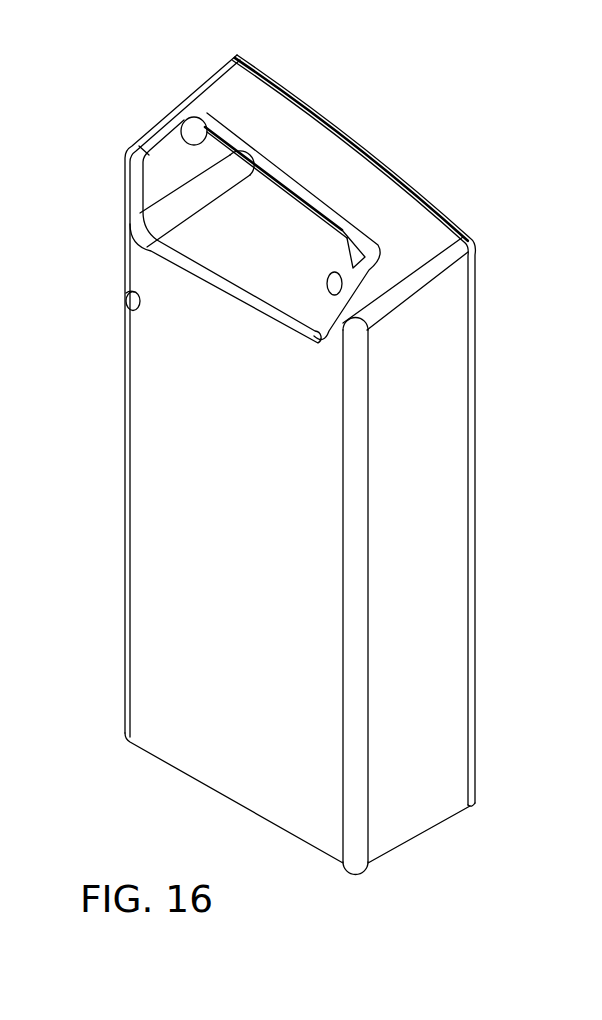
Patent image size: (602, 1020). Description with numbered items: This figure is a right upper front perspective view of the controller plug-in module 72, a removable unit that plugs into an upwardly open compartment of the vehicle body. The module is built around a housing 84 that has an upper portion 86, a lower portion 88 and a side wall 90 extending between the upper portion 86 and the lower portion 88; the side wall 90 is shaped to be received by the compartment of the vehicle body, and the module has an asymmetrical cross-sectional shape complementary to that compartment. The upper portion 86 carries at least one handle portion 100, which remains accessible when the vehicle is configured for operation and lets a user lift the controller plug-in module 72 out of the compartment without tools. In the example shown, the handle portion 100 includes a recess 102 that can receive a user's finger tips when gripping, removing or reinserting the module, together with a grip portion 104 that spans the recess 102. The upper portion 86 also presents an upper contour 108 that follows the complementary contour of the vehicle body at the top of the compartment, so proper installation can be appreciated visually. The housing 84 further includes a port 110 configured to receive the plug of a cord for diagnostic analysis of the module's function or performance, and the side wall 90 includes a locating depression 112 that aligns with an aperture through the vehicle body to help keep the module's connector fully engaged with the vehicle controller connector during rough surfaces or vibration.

The controller plug-in module 72 is at (492, 125).
The housing 84 is at (478, 643).
The upper portion 86 is at (138, 242).
The lower portion 88 is at (443, 772).
The side wall 90 is at (443, 523).
The handle portion 100 is at (310, 195).
The recess 102 is at (193, 165).
The grip portion 104 is at (305, 172).
The upper contour 108 is at (388, 344).
The port 110 is at (326, 275).
The locating depression 112 is at (127, 305).